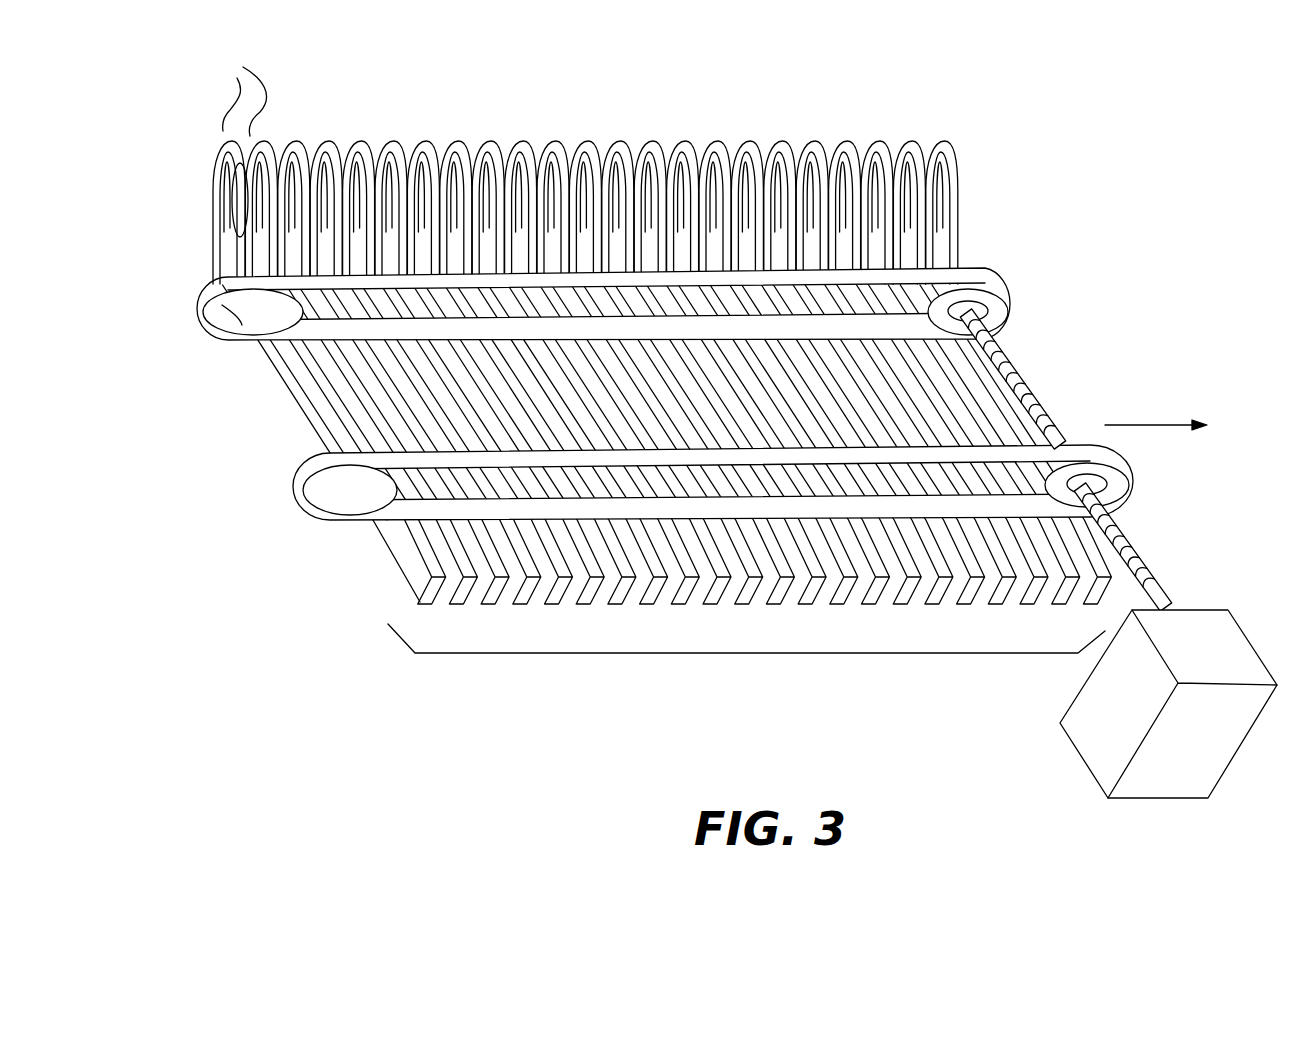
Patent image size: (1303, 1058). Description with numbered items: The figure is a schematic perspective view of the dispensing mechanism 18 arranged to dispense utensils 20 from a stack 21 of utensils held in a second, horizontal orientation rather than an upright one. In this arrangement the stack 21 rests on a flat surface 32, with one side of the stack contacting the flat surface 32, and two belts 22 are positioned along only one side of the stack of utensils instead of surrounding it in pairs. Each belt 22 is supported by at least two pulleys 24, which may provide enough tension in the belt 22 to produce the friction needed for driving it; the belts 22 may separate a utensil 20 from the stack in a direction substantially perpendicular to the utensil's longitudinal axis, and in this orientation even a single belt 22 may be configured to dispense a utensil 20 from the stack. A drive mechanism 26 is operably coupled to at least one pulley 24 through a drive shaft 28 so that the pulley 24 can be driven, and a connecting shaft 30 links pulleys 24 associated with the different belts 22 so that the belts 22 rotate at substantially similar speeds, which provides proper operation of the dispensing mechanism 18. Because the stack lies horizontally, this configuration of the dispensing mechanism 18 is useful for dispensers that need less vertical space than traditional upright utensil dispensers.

The dispensing mechanism 18 is at (703, 422).
The utensil 20 is at (583, 165).
The stack 21 is at (750, 653).
The belt 22 is at (213, 293).
The pulley 24 is at (230, 322).
The drive mechanism 26 is at (1188, 640).
The drive shaft 28 is at (1122, 540).
The connecting shaft 30 is at (1037, 395).
The flat surface 32 is at (700, 637).